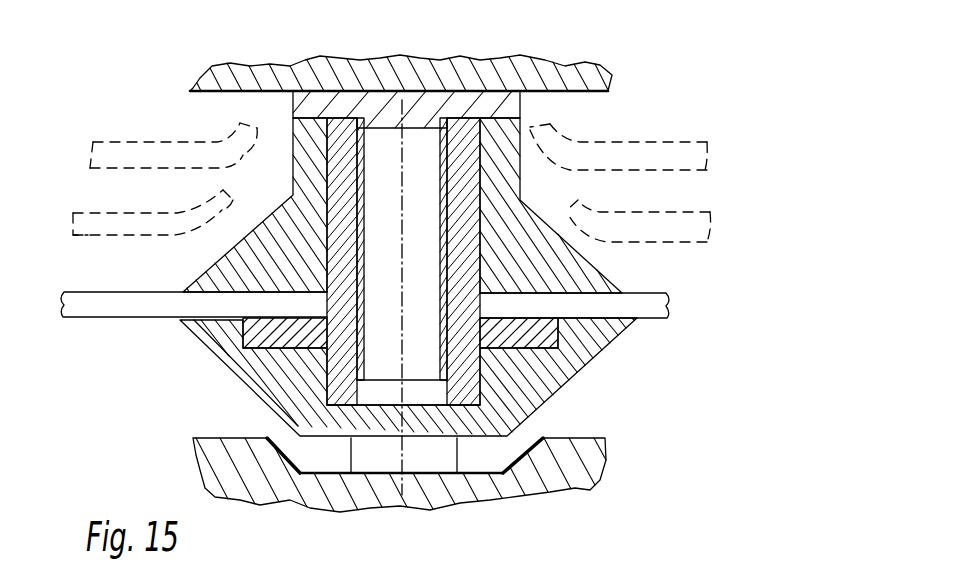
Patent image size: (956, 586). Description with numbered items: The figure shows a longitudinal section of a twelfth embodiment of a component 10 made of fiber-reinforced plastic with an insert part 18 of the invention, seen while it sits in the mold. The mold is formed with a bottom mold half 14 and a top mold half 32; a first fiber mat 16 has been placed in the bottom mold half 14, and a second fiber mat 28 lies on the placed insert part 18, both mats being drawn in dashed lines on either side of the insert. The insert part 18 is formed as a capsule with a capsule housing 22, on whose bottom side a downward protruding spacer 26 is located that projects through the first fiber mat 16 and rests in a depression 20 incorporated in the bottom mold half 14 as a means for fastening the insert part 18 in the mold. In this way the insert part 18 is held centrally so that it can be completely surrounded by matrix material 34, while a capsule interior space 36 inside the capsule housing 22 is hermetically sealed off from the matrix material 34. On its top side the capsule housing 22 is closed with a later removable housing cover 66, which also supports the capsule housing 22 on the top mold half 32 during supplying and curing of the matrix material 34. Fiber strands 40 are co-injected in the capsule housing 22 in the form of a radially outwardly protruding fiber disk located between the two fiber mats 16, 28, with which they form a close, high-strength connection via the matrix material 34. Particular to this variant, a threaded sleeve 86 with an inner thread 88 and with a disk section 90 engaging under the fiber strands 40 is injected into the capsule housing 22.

The component 10 is at (170, 127).
The bottom mold half 14 is at (573, 479).
The first fiber mat 16 is at (83, 216).
The insert part 18 is at (266, 210).
The depression 20 is at (420, 483).
The capsule housing 22 is at (240, 382).
The spacer 26 is at (497, 462).
The second fiber mat 28 is at (108, 140).
The top mold half 32 is at (604, 72).
The matrix material 34 is at (658, 283).
The capsule interior space 36 is at (394, 308).
The fiber strands 40 is at (93, 309).
The housing cover 66 is at (477, 103).
The threaded sleeve 86 is at (363, 205).
The inner thread 88 is at (362, 244).
The disk section 90 is at (283, 343).